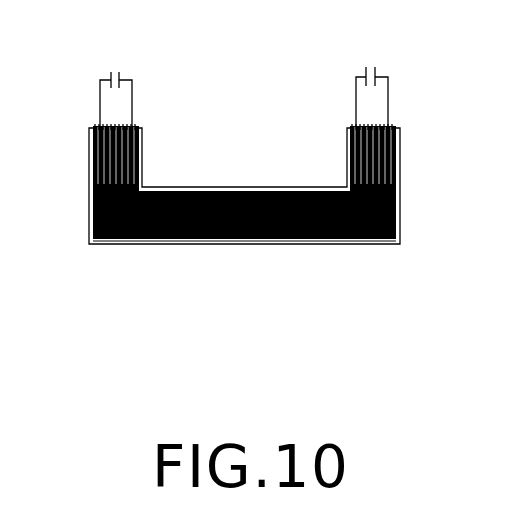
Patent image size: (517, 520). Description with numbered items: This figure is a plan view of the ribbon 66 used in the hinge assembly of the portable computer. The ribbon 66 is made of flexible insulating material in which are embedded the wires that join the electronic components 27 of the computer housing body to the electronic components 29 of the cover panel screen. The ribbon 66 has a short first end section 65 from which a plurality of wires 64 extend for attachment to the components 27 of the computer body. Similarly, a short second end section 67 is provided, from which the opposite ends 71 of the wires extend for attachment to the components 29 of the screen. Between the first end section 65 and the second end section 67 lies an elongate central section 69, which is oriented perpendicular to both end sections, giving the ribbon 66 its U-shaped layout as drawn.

The electronic components 27 is at (111, 78).
The electronic components 29 is at (375, 73).
The wires 64 is at (138, 127).
The opposite ends of the wires 71 is at (368, 125).
The first end section 65 is at (90, 185).
The second end section 67 is at (400, 167).
The ribbon 66 is at (215, 243).
The elongate central section 69 is at (270, 243).